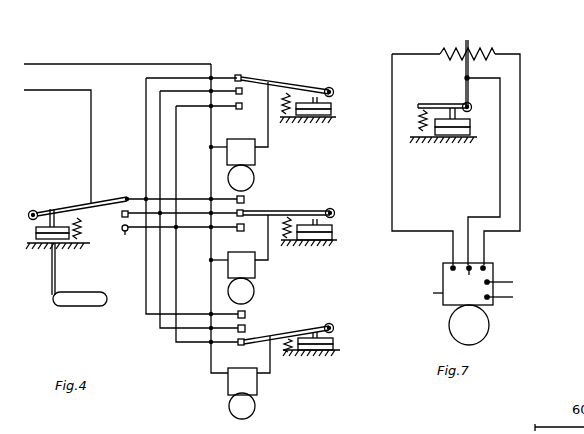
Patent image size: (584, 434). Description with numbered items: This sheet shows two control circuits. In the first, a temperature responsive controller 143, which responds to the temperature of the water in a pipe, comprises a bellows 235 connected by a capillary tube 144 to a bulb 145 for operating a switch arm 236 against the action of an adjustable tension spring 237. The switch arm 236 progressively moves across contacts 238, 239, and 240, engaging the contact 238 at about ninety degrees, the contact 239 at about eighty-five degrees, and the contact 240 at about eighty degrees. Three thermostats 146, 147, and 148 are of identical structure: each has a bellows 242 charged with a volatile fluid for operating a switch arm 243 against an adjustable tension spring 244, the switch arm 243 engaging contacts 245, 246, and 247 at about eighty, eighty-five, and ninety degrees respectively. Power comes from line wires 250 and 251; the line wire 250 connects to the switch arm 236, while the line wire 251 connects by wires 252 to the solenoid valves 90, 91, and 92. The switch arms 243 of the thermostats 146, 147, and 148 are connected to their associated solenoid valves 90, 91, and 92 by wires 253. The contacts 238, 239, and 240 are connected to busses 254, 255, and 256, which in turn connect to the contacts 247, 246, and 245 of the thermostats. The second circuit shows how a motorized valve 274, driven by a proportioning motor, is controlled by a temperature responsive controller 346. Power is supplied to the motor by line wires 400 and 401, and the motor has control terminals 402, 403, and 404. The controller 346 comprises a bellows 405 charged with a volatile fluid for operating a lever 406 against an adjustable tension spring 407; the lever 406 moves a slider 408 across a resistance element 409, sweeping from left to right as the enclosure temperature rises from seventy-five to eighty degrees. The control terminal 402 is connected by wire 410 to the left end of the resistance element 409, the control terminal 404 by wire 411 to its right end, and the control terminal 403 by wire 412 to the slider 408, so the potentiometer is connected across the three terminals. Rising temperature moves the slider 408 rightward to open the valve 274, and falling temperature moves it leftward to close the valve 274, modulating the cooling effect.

In FIG. 4, the line wire 251 is at (47, 66).
In FIG. 4, the line wire 250 is at (39, 91).
In FIG. 4, the bus 254 is at (146, 134).
In FIG. 4, the bus 255 is at (160, 159).
In FIG. 4, the bus 256 is at (176, 172).
In FIG. 4, the temperature responsive controller 143 is at (31, 268).
In FIG. 4, the switch arm 236 is at (70, 205).
In FIG. 4, the contact 238 is at (131, 192).
In FIG. 4, the contact 239 is at (122, 214).
In FIG. 4, the contact 240 is at (116, 238).
In FIG. 4, the adjustable tension spring 237 is at (91, 228).
In FIG. 4, the bellows 235 is at (36, 232).
In FIG. 4, the capillary tube 144 is at (56, 276).
In FIG. 4, the bulb 145 is at (90, 306).
In FIG. 4, the thermostat 148 is at (343, 110).
In FIG. 4, the thermostat 147 is at (346, 240).
In FIG. 4, the thermostat 146 is at (356, 349).
In FIG. 4, the contact 247 is at (242, 77).
In FIG. 4, the contact 246 is at (242, 91).
In FIG. 4, the contact 245 is at (242, 106).
In FIG. 4, the switch arm 243 is at (301, 87).
In FIG. 4, the adjustable tension spring 244 is at (283, 119).
In FIG. 4, the bellows 242 is at (332, 117).
In FIG. 4, the wire 253 is at (270, 147).
In FIG. 4, the wire 252 is at (228, 144).
In FIG. 4, the solenoid valve 92 is at (252, 160).
In FIG. 4, the solenoid valve 91 is at (250, 282).
In FIG. 4, the solenoid valve 90 is at (252, 394).
In FIG. 7, the temperature responsive controller 346 is at (534, 42).
In FIG. 7, the wire 410 is at (392, 213).
In FIG. 7, the wire 411 is at (520, 210).
In FIG. 7, the wire 412 is at (500, 190).
In FIG. 7, the resistance element 409 is at (477, 60).
In FIG. 7, the slider 408 is at (466, 73).
In FIG. 7, the lever 406 is at (448, 100).
In FIG. 7, the adjustable tension spring 407 is at (423, 126).
In FIG. 7, the bellows 405 is at (470, 127).
In FIG. 7, the control terminal 402 is at (450, 268).
In FIG. 7, the control terminal 404 is at (487, 266).
In FIG. 7, the control terminal 403 is at (468, 304).
In FIG. 7, the line wire 400 is at (513, 282).
In FIG. 7, the line wire 401 is at (513, 297).
In FIG. 7, the motorized valve 274 is at (424, 293).